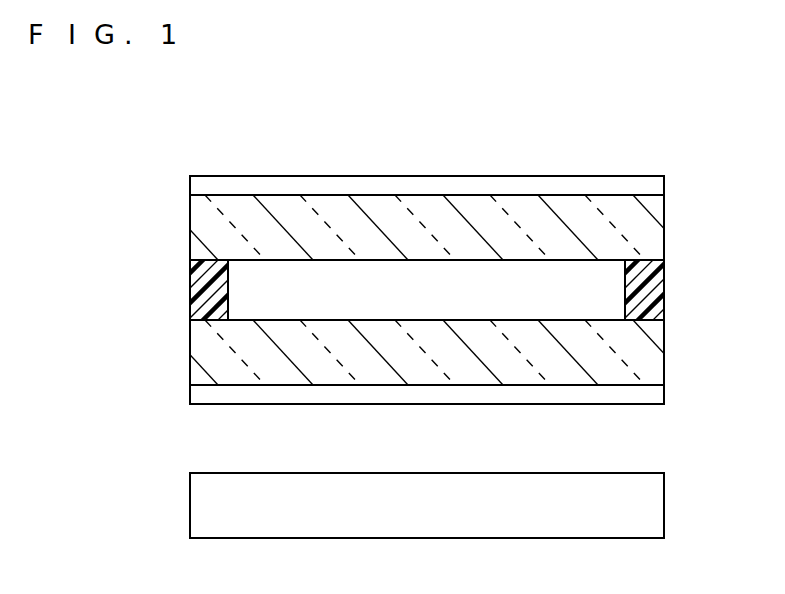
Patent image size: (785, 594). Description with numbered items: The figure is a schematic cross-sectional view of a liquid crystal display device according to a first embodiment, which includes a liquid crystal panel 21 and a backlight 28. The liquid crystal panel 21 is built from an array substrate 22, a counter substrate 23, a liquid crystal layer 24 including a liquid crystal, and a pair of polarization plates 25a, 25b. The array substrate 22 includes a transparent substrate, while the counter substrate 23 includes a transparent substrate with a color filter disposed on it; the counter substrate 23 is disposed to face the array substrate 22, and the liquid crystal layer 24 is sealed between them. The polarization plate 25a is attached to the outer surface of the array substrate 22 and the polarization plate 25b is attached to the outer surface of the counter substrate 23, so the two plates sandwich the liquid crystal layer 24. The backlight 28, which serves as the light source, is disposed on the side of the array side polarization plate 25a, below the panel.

The liquid crystal panel 21 is at (493, 148).
The array substrate 22 is at (664, 354).
The counter substrate 23 is at (664, 229).
The liquid crystal layer 24 is at (391, 285).
The polarization plate 25a is at (664, 394).
The polarization plate 25b is at (664, 186).
The backlight 28 is at (664, 508).